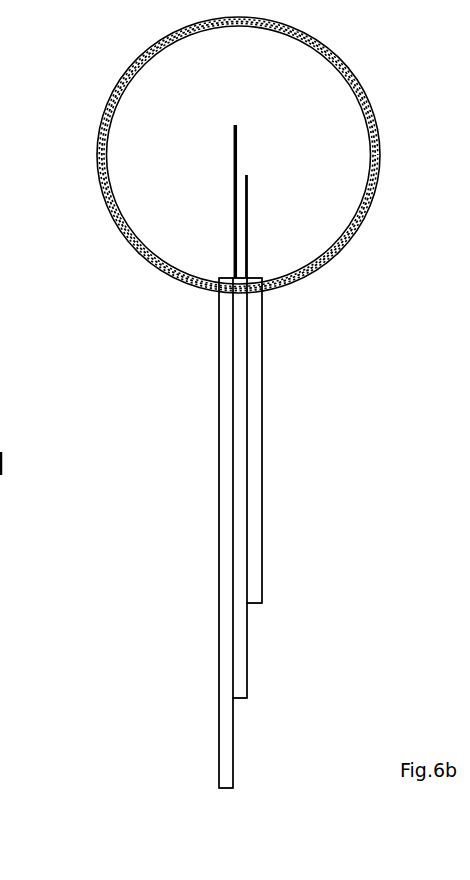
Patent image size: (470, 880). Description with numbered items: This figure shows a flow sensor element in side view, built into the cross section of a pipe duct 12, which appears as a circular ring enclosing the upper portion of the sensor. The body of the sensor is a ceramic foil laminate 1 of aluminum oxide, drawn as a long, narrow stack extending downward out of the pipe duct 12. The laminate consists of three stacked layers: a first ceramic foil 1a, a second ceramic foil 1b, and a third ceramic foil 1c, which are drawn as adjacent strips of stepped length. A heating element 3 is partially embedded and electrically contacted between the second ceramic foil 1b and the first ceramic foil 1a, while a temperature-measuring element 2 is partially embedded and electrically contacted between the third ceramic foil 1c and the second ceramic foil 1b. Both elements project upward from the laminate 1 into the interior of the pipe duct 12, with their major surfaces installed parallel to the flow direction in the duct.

The pipe duct 12 is at (380, 149).
The heating element 3 is at (234, 190).
The temperature-measuring element 2 is at (248, 203).
The ceramic foil laminate 1 is at (219, 414).
The first ceramic foil 1a is at (223, 767).
The second ceramic foil 1b is at (242, 682).
The third ceramic foil 1c is at (255, 588).